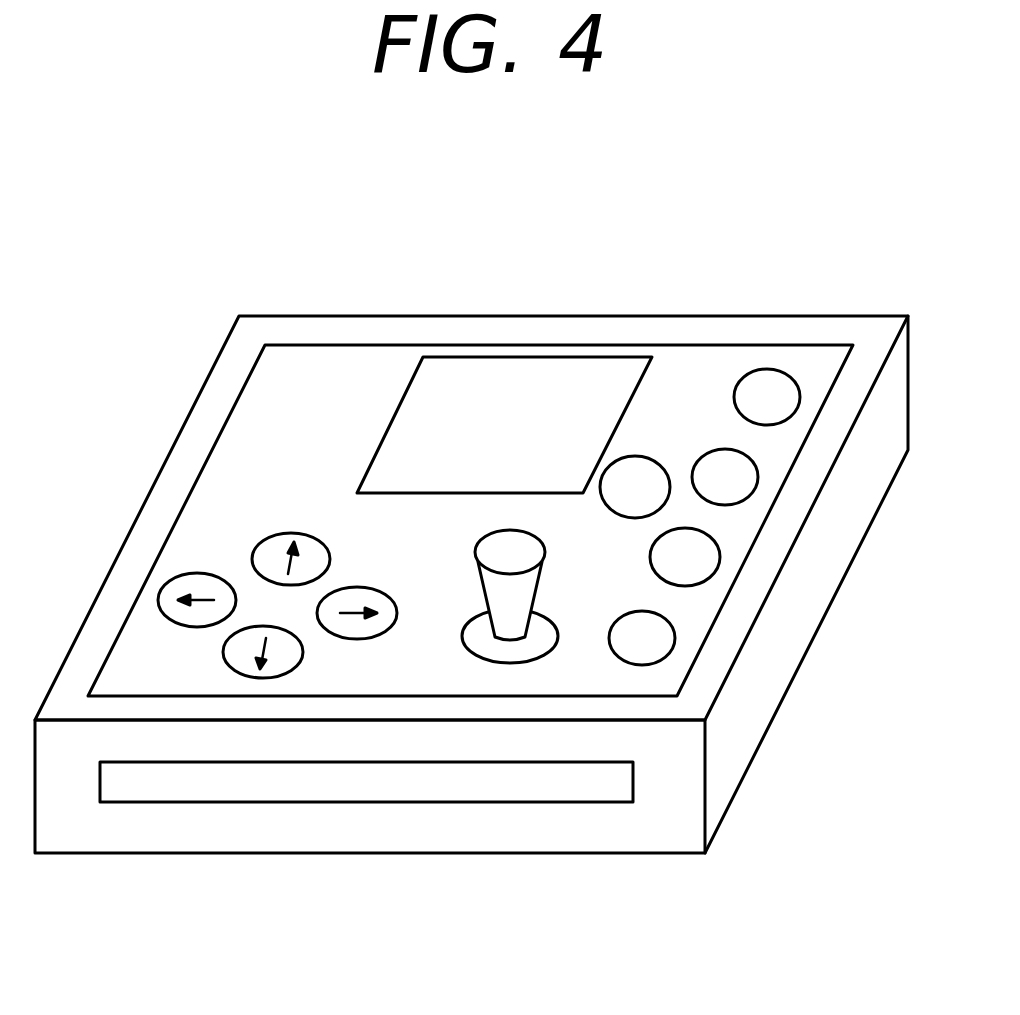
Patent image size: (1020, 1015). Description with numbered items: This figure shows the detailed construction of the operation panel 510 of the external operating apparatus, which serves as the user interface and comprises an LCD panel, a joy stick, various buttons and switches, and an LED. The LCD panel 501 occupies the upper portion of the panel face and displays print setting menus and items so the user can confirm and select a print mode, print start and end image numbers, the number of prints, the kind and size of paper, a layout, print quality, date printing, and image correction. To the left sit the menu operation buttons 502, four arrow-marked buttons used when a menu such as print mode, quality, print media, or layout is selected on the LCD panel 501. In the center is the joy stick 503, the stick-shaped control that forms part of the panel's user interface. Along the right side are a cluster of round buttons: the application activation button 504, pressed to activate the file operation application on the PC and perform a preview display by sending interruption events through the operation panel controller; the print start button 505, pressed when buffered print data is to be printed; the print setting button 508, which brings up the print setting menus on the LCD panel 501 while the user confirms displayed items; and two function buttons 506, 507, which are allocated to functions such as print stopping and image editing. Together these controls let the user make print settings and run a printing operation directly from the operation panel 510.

The operation panel 510 is at (318, 345).
The LCD panel 501 is at (523, 357).
The menu operation button 502 is at (287, 585).
The joystick 503 is at (510, 665).
The application activation button 504 is at (767, 369).
The print start button 505 is at (725, 449).
The function button 506 is at (710, 578).
The function button 507 is at (640, 665).
The print setting button 508 is at (668, 500).